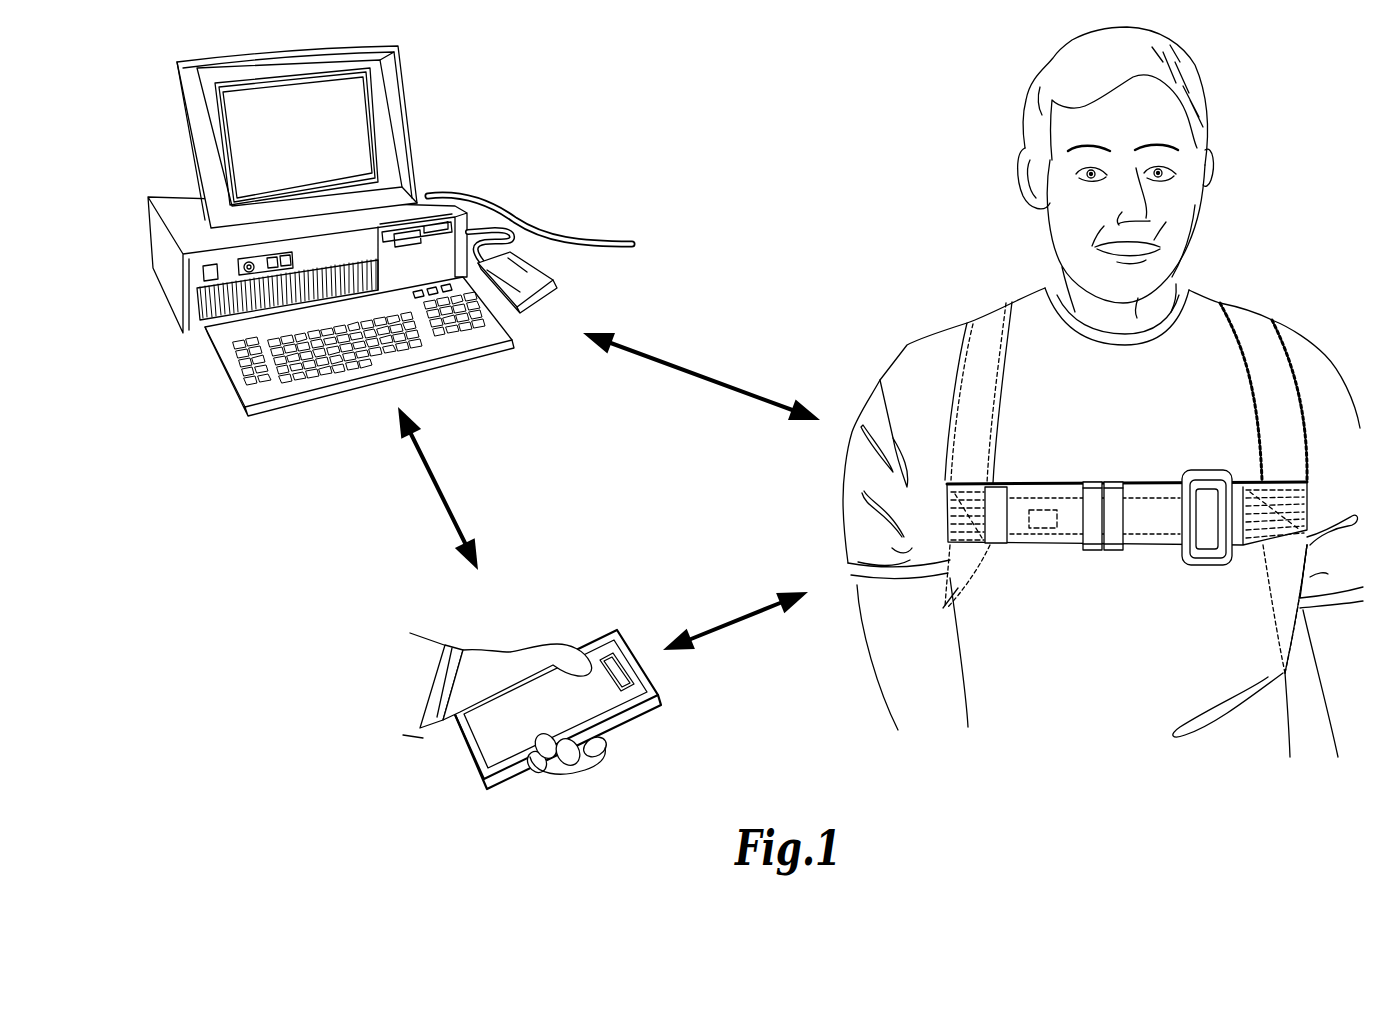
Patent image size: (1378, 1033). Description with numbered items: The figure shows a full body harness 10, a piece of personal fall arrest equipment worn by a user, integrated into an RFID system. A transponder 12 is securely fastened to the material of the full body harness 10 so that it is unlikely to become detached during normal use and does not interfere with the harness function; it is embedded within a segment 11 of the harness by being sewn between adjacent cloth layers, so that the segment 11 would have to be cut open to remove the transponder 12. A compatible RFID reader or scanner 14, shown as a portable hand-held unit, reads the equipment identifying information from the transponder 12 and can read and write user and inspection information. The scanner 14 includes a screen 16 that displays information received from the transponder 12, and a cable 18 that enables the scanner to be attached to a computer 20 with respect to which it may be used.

The full body harness 10 is at (984, 376).
The segment 11 is at (1067, 512).
The transponder 12 is at (1042, 529).
The RFID reader or scanner 14 is at (580, 641).
The screen 16 is at (622, 652).
The cable 18 is at (598, 243).
The computer 20 is at (478, 147).